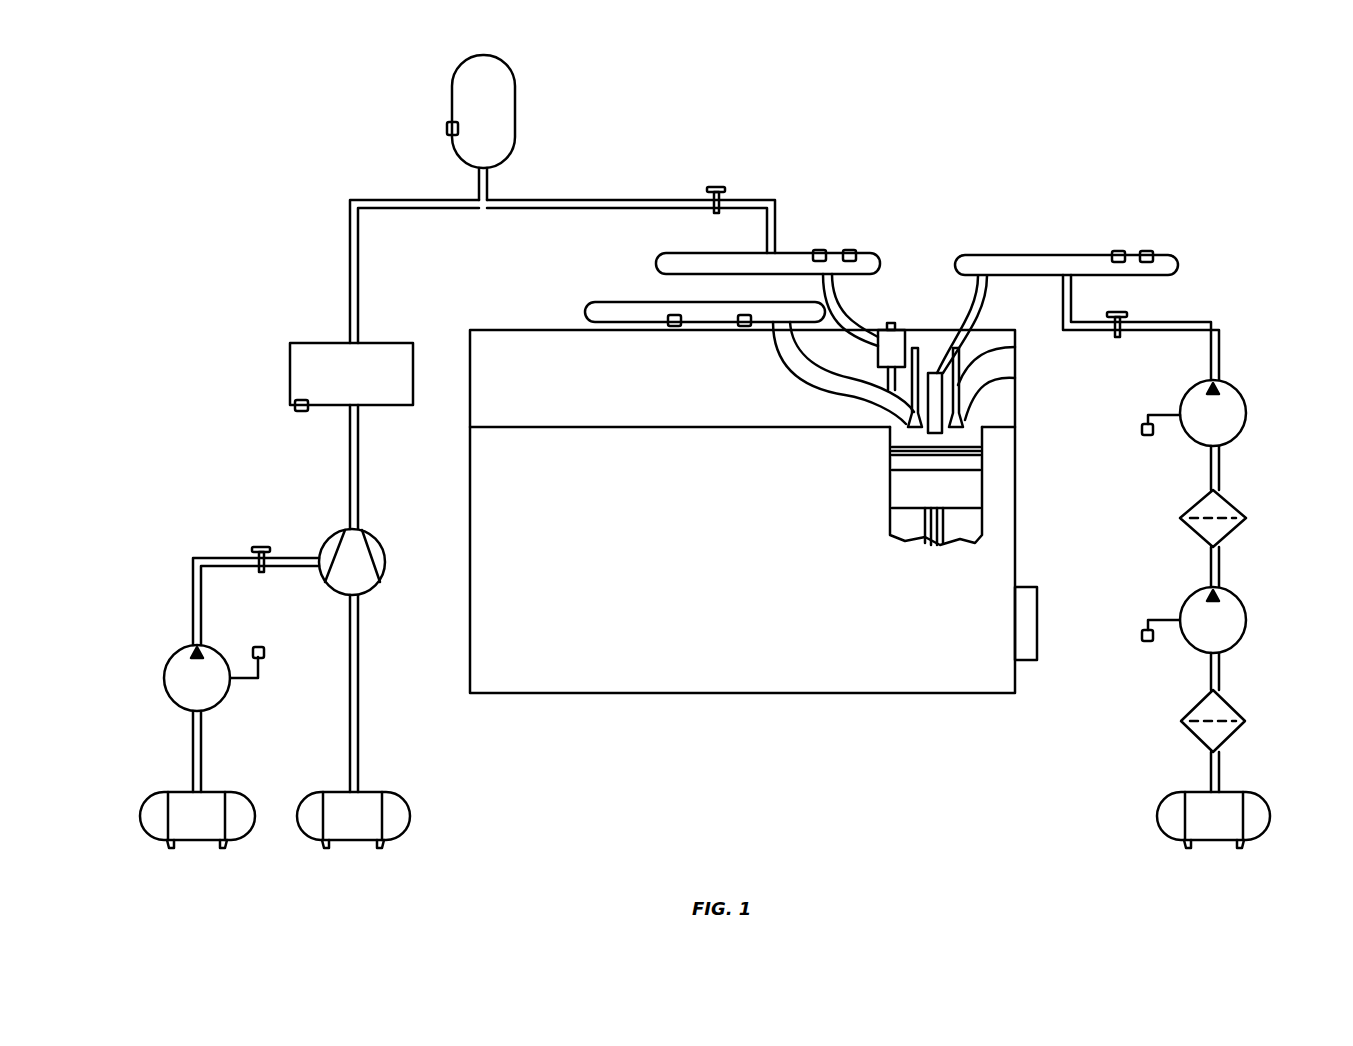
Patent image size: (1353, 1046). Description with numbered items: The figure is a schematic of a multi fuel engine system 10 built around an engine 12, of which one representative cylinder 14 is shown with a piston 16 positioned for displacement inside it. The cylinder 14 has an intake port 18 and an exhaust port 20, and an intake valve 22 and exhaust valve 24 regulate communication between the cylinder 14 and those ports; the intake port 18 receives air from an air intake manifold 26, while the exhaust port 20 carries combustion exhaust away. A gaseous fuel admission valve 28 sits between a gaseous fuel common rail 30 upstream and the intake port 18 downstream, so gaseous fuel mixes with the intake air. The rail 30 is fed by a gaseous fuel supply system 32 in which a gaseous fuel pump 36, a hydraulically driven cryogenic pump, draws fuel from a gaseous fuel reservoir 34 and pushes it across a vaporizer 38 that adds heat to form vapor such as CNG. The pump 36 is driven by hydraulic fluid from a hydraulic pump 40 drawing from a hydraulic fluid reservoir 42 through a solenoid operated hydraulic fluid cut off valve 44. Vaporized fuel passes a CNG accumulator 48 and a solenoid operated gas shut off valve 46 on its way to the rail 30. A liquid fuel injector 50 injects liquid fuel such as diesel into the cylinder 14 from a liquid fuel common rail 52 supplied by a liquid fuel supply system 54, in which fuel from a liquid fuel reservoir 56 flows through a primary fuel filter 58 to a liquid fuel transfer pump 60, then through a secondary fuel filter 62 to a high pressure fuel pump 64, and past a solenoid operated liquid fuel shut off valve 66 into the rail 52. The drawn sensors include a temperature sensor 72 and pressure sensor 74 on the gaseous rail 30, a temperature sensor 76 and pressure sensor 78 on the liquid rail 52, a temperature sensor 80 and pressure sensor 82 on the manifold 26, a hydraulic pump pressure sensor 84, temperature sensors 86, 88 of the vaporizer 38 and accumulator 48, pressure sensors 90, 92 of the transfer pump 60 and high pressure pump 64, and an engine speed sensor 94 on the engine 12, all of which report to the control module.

The multi fuel engine system 10 is at (834, 138).
The engine 12 is at (680, 697).
The cylinder 14 is at (890, 523).
The piston 16 is at (898, 466).
The intake port 18 is at (808, 376).
The exhaust port 20 is at (1003, 380).
The intake valve 22 is at (906, 418).
The exhaust valve 24 is at (963, 412).
The air intake manifold 26 is at (588, 311).
The gaseous fuel admission valve 28 is at (885, 328).
The gaseous fuel common rail 30 is at (722, 253).
The gaseous fuel supply system 32 is at (258, 218).
The gaseous fuel reservoir 34 is at (398, 804).
The gaseous fuel pump 36 is at (385, 552).
The vaporizer 38 is at (290, 370).
The hydraulic pump 40 is at (228, 700).
The hydraulic fluid reservoir 42 is at (245, 802).
The hydraulic fluid cut off valve 44 is at (257, 547).
The gas shut off valve 46 is at (715, 186).
The CNG accumulator 48 is at (452, 93).
The liquid fuel injector 50 is at (935, 372).
The liquid fuel common rail 52 is at (1030, 254).
The liquid fuel supply system 54 is at (1230, 270).
The liquid fuel reservoir 56 is at (1170, 806).
The primary fuel filter 58 is at (1194, 706).
The liquid fuel transfer pump 60 is at (1243, 602).
The secondary fuel filter 62 is at (1192, 502).
The high pressure fuel pump 64 is at (1240, 397).
The liquid fuel shut off valve 66 is at (1115, 338).
The temperature sensor 72 is at (819, 250).
The pressure sensor 74 is at (850, 250).
The temperature sensor 76 is at (1116, 251).
The pressure sensor 78 is at (1148, 251).
The temperature sensor 80 is at (673, 327).
The pressure sensor 82 is at (743, 327).
The hydraulic pump pressure sensor 84 is at (266, 652).
The temperature sensor 86 is at (297, 412).
The temperature sensor 88 is at (446, 134).
The pressure sensor 90 is at (1144, 642).
The pressure sensor 92 is at (1144, 437).
The engine speed sensor 94 is at (1037, 615).